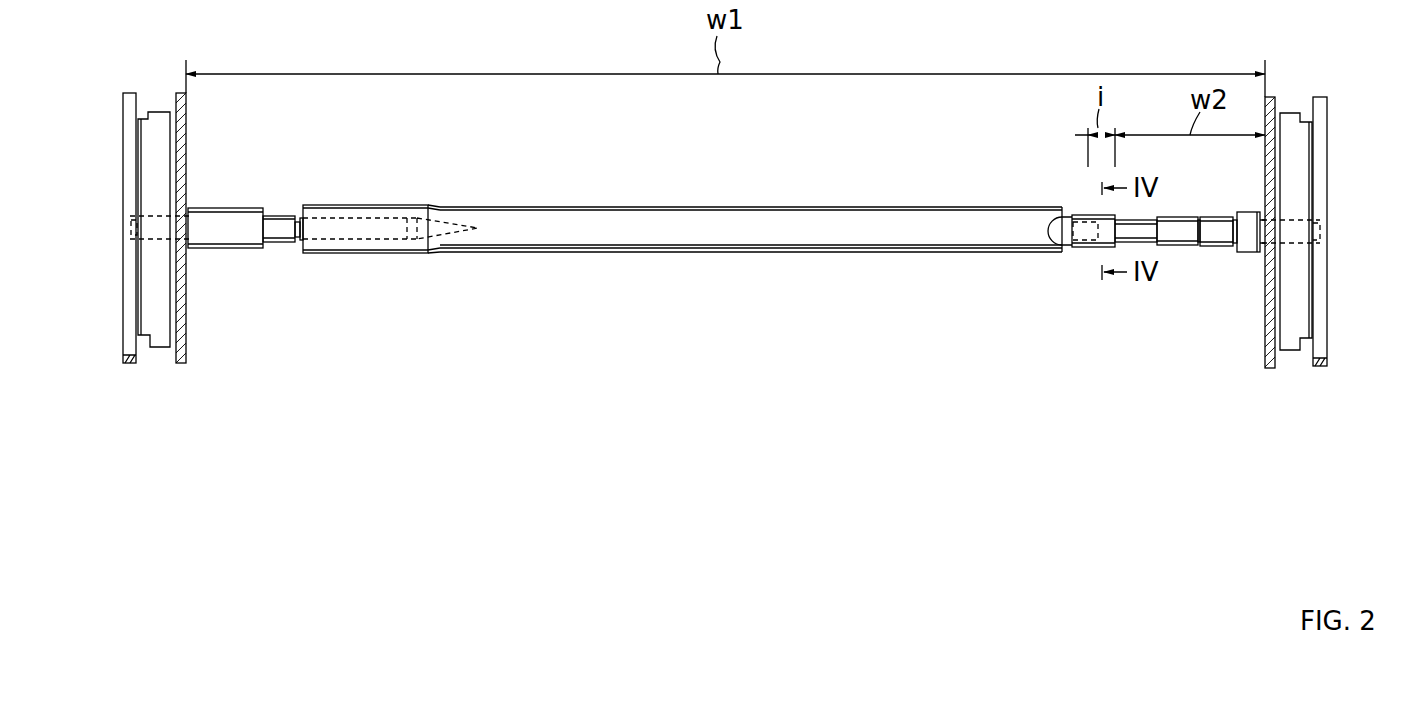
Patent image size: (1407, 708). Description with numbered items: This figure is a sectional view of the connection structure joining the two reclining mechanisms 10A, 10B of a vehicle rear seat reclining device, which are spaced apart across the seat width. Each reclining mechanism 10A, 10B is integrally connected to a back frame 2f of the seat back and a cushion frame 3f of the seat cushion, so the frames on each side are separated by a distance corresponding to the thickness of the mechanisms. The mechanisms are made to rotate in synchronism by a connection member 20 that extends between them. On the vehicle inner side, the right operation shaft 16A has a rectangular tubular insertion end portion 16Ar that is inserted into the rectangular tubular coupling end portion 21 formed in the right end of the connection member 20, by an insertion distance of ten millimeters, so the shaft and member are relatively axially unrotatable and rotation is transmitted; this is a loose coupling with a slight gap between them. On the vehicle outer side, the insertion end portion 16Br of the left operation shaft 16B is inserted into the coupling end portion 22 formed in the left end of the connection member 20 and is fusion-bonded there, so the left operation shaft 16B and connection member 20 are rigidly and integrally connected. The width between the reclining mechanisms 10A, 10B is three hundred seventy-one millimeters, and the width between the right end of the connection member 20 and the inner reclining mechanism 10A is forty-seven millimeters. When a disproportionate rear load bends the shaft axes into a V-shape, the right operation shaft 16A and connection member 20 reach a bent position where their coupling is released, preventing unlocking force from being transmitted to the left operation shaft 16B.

The reclining mechanism 10B is at (158, 178).
The reclining mechanism 10A is at (1297, 172).
The operation shaft 16B is at (234, 233).
The insertion end portion 16Br is at (357, 232).
The coupling end portion 22 is at (338, 215).
The connection member 20 is at (704, 224).
The coupling end portion 21 is at (1080, 218).
The insertion end portion 16Ar is at (1093, 251).
The operation shaft 16A is at (1186, 232).
The back frame 2f is at (189, 331).
The cushion frame 3f is at (128, 354).